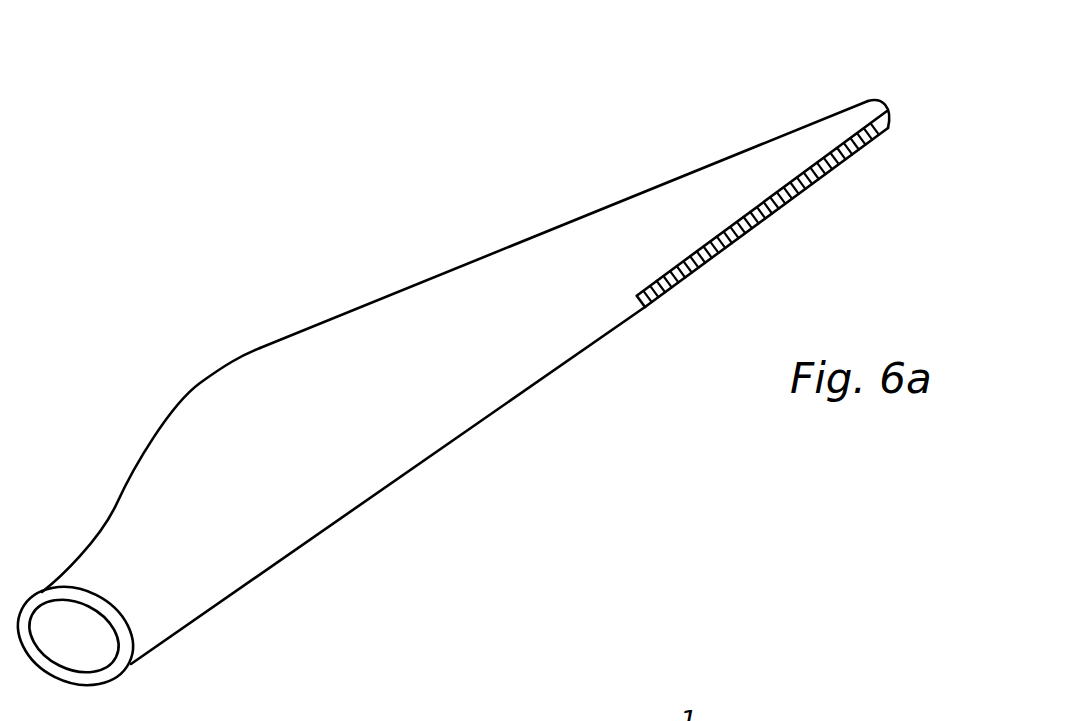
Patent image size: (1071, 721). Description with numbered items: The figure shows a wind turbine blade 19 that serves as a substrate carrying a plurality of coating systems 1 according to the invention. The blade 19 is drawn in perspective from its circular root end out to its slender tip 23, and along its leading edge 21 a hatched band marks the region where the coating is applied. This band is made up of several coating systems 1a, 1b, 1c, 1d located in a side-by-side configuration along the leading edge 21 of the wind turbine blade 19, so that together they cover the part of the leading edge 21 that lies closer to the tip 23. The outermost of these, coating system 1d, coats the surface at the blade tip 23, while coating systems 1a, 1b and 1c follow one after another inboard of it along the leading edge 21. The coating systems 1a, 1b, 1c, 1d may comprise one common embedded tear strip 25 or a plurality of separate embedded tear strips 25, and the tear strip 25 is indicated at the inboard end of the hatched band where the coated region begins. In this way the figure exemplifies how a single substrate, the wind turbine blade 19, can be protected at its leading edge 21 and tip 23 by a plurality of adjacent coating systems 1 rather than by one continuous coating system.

The coating system 1 is at (470, 354).
The coating system 1a is at (685, 287).
The coating system 1b is at (743, 247).
The coating system 1c is at (830, 177).
The coating system 1d is at (882, 134).
The wind turbine blade 19 is at (357, 398).
The leading edge 21 is at (582, 390).
The tip 23 is at (827, 88).
The embedded tear strip 25 is at (697, 228).